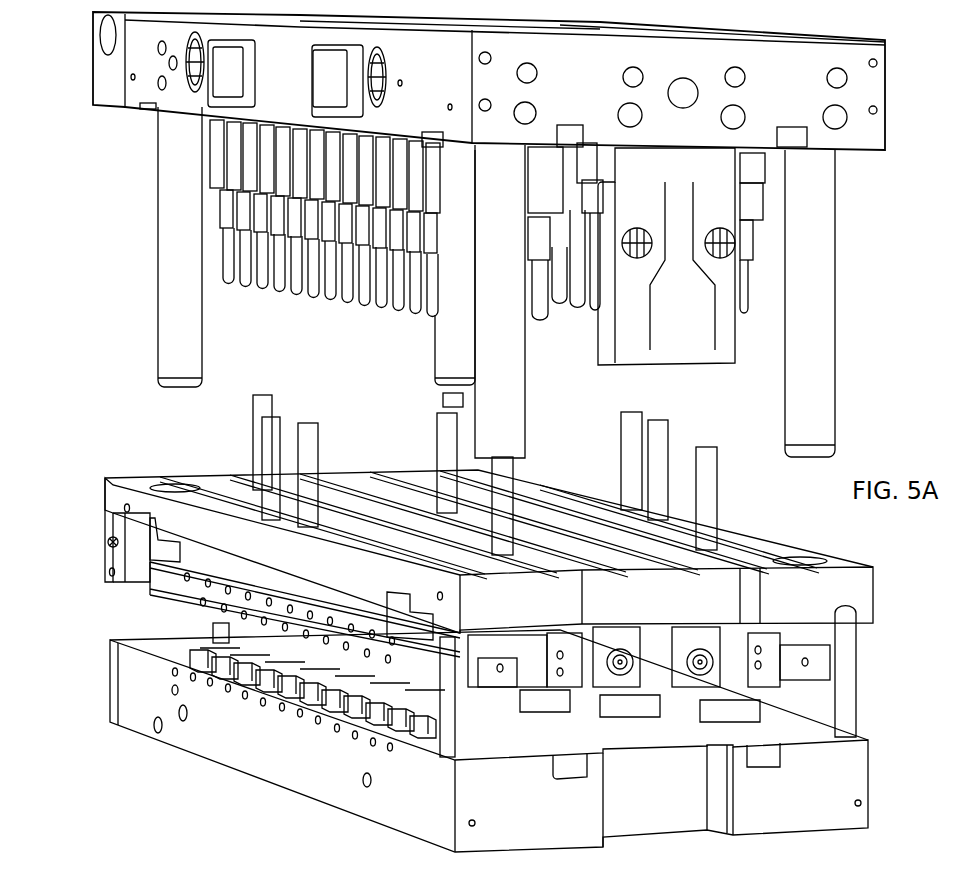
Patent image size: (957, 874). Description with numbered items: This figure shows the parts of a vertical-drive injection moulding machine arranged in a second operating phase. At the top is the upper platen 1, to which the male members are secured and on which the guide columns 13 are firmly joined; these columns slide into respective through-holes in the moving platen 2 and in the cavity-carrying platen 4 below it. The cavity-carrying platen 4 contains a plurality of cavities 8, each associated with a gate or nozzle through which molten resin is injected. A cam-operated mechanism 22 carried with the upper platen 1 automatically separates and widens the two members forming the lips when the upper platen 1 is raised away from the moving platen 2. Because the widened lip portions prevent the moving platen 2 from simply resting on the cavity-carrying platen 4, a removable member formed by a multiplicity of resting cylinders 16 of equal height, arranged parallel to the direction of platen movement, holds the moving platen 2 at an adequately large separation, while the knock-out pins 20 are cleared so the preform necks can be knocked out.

The upper platen 1 is at (863, 97).
The moving platen 2 is at (853, 593).
The cavity-carrying platen 4 is at (837, 777).
The cavities 8 is at (210, 660).
The guide columns 13 is at (810, 228).
The resting cylinders 16 is at (845, 697).
The knock-out pins 20 is at (312, 468).
The cam-operated mechanism 22 is at (666, 256).